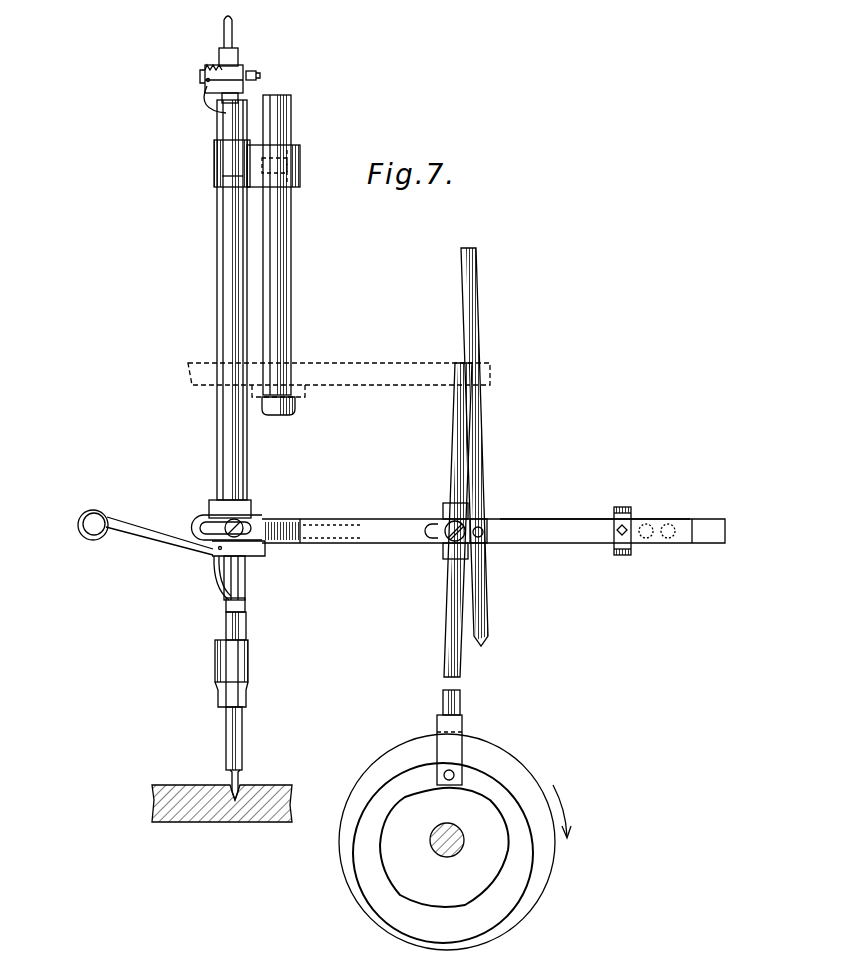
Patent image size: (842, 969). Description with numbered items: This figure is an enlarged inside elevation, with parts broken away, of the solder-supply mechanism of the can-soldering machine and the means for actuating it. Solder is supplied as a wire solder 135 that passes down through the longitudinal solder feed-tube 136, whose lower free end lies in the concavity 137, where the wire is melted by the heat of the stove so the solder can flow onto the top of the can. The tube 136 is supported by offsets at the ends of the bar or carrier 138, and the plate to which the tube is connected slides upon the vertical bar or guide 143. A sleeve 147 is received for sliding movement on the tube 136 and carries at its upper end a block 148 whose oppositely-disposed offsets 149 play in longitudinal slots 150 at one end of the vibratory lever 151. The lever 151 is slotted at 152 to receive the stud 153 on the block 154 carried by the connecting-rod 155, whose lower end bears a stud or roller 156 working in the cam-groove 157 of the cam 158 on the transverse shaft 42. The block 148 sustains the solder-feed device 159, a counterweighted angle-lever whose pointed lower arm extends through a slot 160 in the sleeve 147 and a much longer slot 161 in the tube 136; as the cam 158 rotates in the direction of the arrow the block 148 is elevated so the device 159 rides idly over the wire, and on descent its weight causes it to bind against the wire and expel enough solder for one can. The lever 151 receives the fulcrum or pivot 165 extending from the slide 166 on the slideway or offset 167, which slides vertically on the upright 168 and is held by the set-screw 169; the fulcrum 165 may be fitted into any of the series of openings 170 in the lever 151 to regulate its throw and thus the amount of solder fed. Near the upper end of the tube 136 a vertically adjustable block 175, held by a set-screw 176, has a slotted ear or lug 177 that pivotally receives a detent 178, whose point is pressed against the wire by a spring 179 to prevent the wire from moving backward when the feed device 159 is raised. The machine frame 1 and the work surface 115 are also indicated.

The machine frame 1 is at (629, 480).
The transverse shaft 42 is at (446, 852).
The work piece 115 is at (184, 766).
The wire solder 135 is at (234, 30).
The solder feed-tube 136 is at (238, 55).
The concavity 137 is at (240, 790).
The bar or carrier 138 is at (216, 328).
The vertical bar or guide 143 is at (292, 277).
The sleeve 147 is at (248, 573).
The block 148 is at (240, 505).
The offsets 149 is at (246, 516).
The longitudinal slots 150 is at (206, 516).
The vibratory lever 151 is at (409, 548).
The longitudinal slot 152 is at (436, 530).
The stud or stud-screw 153 is at (462, 523).
The block 154 is at (456, 510).
The connecting-rod 155 is at (456, 660).
The stud or roller 156 is at (462, 765).
The cam-groove 157 is at (497, 783).
The cam 158 is at (548, 876).
The solder-feed device 159 is at (168, 548).
The slot 160 is at (222, 603).
The slot 161 is at (246, 597).
The fulcrum or pivot 165 is at (650, 527).
The slide 166 is at (630, 555).
The slideway or offset 167 is at (573, 546).
The upright or post 168 is at (486, 613).
The set-screw 169 is at (486, 529).
The openings 170 is at (670, 528).
The block or carrier 175 is at (243, 70).
The set-screw 176 is at (260, 76).
The slotted ear or lug 177 is at (203, 81).
The detent 178 is at (210, 106).
The spring 179 is at (212, 67).